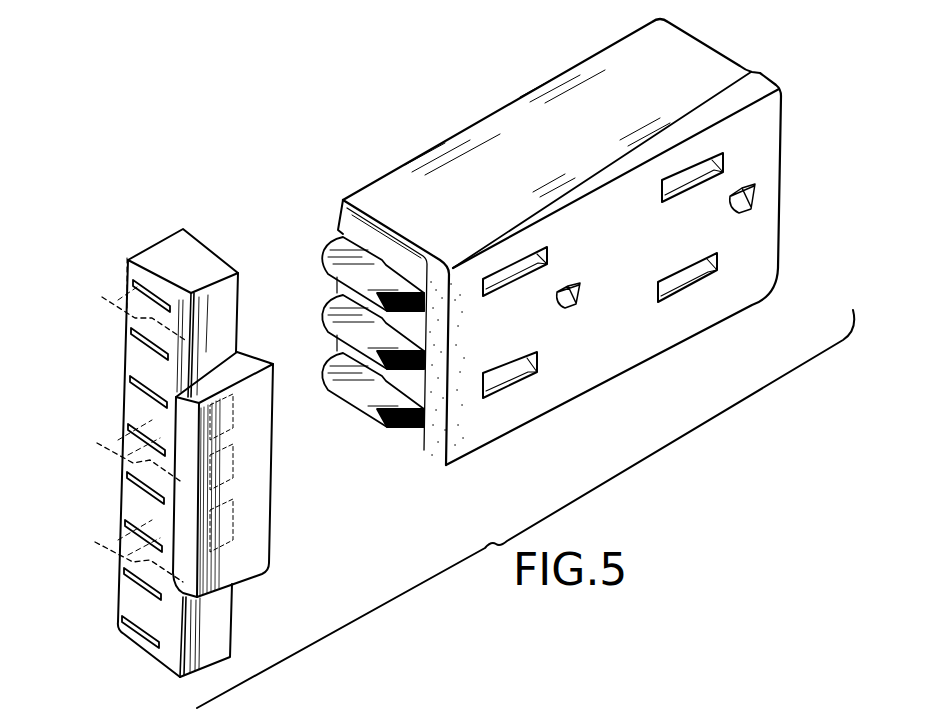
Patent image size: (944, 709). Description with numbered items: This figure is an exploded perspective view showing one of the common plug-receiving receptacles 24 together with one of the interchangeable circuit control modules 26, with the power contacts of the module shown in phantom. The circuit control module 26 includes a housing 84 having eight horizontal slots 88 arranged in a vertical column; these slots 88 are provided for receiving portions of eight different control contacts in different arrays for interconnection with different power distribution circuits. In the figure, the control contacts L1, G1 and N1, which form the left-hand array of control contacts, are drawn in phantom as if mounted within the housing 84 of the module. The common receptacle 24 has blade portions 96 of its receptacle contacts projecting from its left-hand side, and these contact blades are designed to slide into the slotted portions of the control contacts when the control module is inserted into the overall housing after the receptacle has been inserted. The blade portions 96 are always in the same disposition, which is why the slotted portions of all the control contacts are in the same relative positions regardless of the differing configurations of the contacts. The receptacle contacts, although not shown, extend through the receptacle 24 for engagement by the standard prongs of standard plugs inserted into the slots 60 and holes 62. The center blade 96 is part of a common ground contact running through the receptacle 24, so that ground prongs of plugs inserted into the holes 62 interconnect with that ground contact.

The common receptacle 24 is at (550, 251).
The circuit control module 26 is at (149, 421).
The slots 60 is at (525, 268).
The holes 62 is at (758, 193).
The housing 84 is at (193, 256).
The horizontal slots 88 is at (155, 397).
The blade portions 96 is at (325, 270).
The control contact L1 is at (97, 296).
The control contact G1 is at (100, 444).
The control contact N1 is at (108, 532).